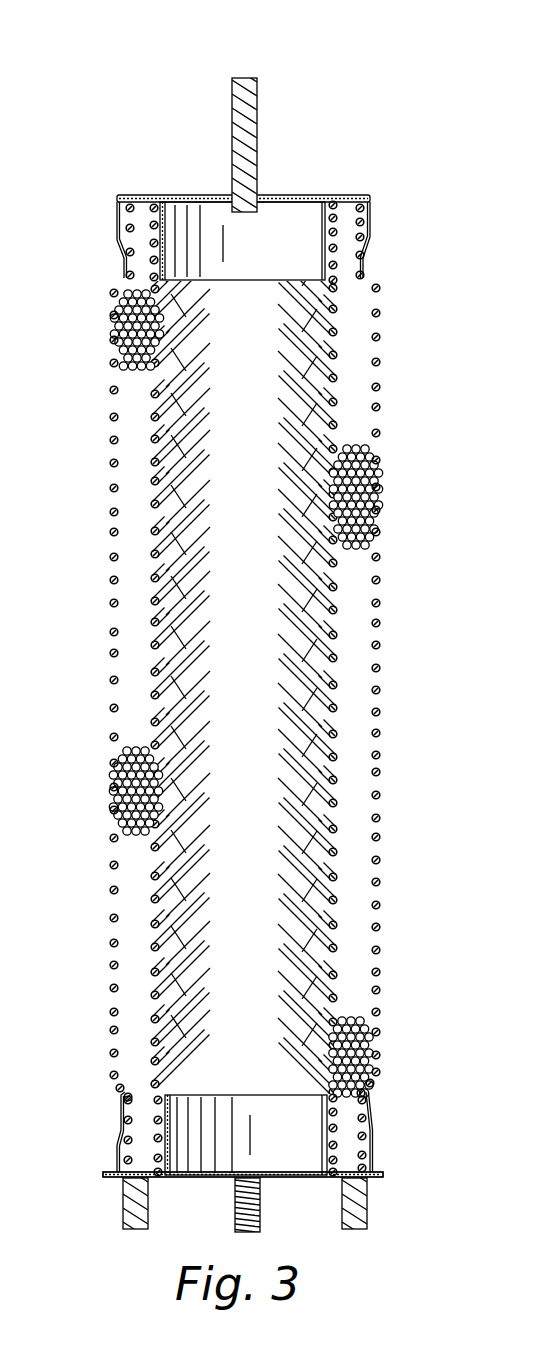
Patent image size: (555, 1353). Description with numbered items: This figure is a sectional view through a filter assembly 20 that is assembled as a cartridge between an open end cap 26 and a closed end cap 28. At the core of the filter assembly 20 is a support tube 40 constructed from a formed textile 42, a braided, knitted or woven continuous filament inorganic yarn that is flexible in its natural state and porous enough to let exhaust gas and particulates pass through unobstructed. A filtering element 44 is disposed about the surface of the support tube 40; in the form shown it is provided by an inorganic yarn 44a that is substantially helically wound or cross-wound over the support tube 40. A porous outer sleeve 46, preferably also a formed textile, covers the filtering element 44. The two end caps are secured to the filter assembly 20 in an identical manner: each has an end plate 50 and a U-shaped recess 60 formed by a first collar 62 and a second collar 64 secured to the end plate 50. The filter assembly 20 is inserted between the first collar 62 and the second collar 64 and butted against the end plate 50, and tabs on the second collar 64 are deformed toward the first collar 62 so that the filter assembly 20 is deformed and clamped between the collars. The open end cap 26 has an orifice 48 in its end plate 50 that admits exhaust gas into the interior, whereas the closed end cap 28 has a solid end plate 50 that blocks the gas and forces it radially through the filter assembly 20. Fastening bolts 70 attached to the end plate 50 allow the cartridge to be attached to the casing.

The filter assembly 20 is at (90, 539).
The open end cap 26 is at (100, 1182).
The closed end cap 28 is at (110, 206).
The support tube 40 is at (340, 370).
The formed textile 42 is at (334, 408).
The filtering element 44 is at (350, 658).
The inorganic yarn 44a is at (372, 493).
The outer sleeve 46 is at (386, 757).
The orifice 48 is at (292, 1154).
The end plate 50 is at (270, 196).
The U-shaped recess 60 is at (376, 208).
The first collar 62 is at (326, 246).
The second collar 64 is at (122, 252).
The fastening bolts 70 is at (232, 92).